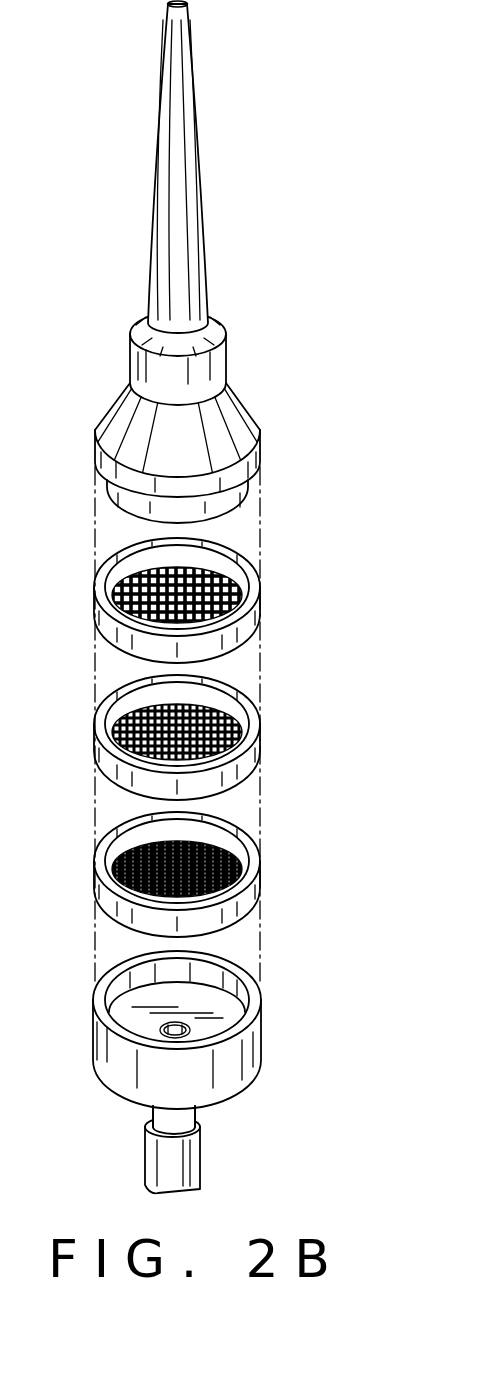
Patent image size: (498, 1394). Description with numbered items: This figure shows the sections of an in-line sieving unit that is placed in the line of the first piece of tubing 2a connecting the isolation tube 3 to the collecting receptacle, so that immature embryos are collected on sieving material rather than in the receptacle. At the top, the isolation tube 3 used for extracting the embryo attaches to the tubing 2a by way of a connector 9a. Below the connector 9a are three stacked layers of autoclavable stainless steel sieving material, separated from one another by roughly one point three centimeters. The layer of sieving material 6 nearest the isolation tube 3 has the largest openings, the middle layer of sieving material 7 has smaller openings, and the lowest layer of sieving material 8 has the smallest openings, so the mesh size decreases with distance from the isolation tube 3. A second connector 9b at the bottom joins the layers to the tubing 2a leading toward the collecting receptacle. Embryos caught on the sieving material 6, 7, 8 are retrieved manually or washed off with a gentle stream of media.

The isolation tube 3 is at (187, 145).
The first piece of tubing 2a is at (215, 363).
The connector 9a is at (256, 457).
The layer of sieving material 6 is at (235, 591).
The middle layer of sieving material 7 is at (233, 723).
The layer of sieving material 8 is at (237, 852).
The connector 9b is at (260, 1036).